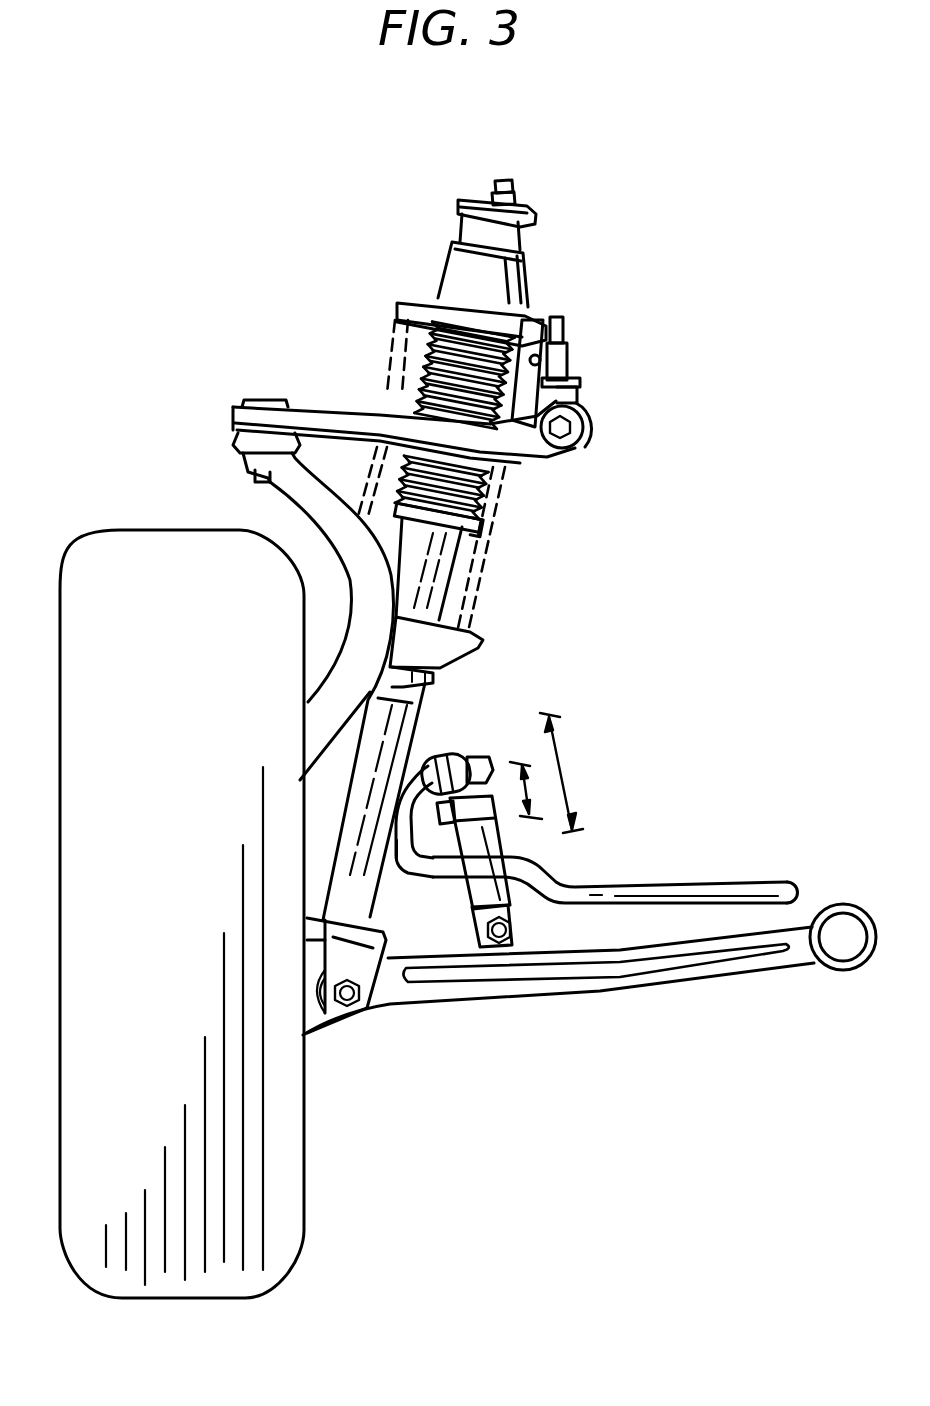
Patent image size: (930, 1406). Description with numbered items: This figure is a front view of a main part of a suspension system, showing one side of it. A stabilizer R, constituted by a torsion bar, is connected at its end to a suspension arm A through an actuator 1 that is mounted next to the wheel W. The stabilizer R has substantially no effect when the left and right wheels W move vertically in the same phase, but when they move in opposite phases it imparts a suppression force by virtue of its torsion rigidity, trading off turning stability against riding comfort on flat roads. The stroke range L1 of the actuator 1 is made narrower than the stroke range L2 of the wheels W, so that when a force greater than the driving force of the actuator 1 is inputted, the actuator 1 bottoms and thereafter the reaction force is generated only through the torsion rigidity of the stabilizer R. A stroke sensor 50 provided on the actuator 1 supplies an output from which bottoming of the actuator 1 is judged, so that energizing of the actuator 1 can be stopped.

The wheel W is at (142, 535).
The suspension arm A is at (630, 980).
The stabilizer R is at (723, 883).
The actuator 1 is at (545, 848).
The stroke sensor 50 is at (426, 872).
The stroke range of the actuator L1 is at (546, 790).
The stroke range of the wheels L2 is at (560, 783).